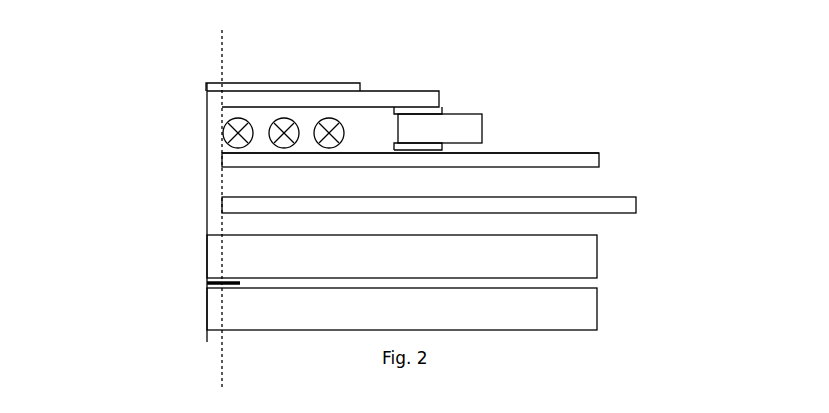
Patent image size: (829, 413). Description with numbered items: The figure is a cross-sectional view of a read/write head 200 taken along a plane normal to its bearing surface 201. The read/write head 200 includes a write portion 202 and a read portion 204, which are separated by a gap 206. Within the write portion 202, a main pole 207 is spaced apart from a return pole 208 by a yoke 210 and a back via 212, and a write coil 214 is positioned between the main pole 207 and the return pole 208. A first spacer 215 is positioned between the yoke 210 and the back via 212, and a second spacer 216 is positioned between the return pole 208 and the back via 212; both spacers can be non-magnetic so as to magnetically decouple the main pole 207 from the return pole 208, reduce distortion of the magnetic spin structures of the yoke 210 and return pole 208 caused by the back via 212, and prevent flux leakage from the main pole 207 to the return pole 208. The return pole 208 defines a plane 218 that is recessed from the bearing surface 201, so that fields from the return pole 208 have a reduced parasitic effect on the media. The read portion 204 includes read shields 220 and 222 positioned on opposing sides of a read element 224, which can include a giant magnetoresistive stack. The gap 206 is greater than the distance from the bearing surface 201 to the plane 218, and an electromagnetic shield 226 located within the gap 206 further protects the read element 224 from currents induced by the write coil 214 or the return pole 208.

The read/write head 200 is at (672, 53).
The bearing surface 201 is at (198, 233).
The write portion 202 is at (681, 80).
The read portion 204 is at (681, 233).
The gap 206 is at (681, 173).
The main pole 207 is at (328, 86).
The return pole 208 is at (235, 159).
The yoke 210 is at (422, 92).
The back via 212 is at (465, 128).
The write coil 214 is at (228, 132).
The first spacer 215 is at (432, 110).
The second spacer 216 is at (565, 148).
The plane 218 is at (226, 49).
The read shield 220 is at (215, 317).
The read shield 222 is at (215, 251).
The read element 224 is at (212, 287).
The electromagnetic shield 226 is at (573, 205).